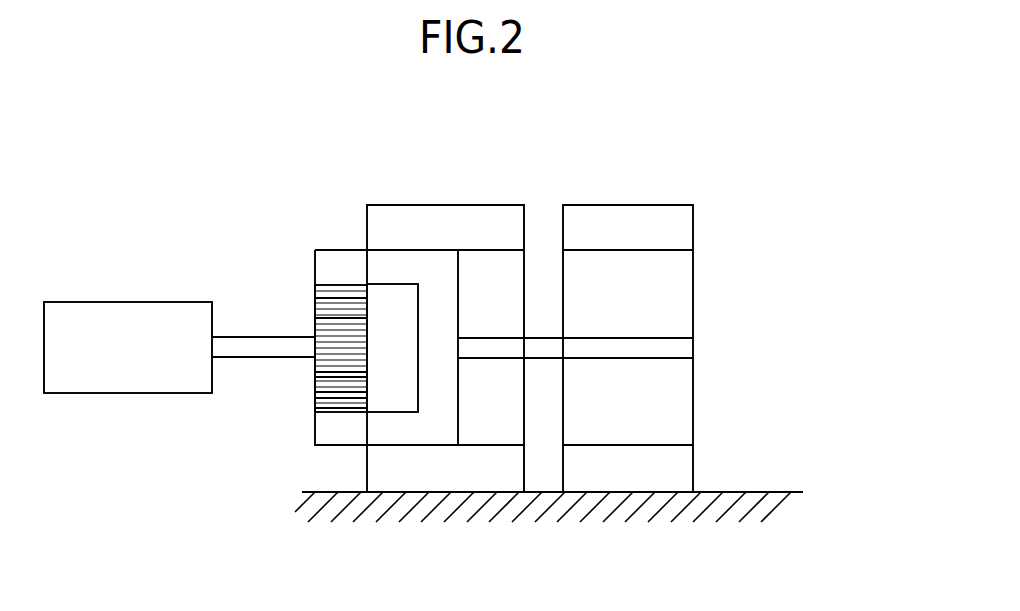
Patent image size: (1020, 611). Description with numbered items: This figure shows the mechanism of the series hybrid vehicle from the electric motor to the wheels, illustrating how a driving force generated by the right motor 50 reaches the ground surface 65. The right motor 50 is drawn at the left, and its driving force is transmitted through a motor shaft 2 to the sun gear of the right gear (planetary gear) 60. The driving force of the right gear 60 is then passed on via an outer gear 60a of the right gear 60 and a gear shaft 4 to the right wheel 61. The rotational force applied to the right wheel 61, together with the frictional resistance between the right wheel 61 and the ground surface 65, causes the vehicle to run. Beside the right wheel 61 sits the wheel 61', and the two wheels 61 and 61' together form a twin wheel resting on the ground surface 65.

The right motor 50 is at (125, 320).
The motor shaft 2 is at (267, 348).
The right gear (planetary gear) 60 is at (341, 301).
The right wheel 61 is at (419, 317).
The wheel 61' is at (628, 317).
The outer gear 60a is at (367, 312).
The gear shaft 4 is at (630, 348).
The ground surface 65 is at (758, 492).